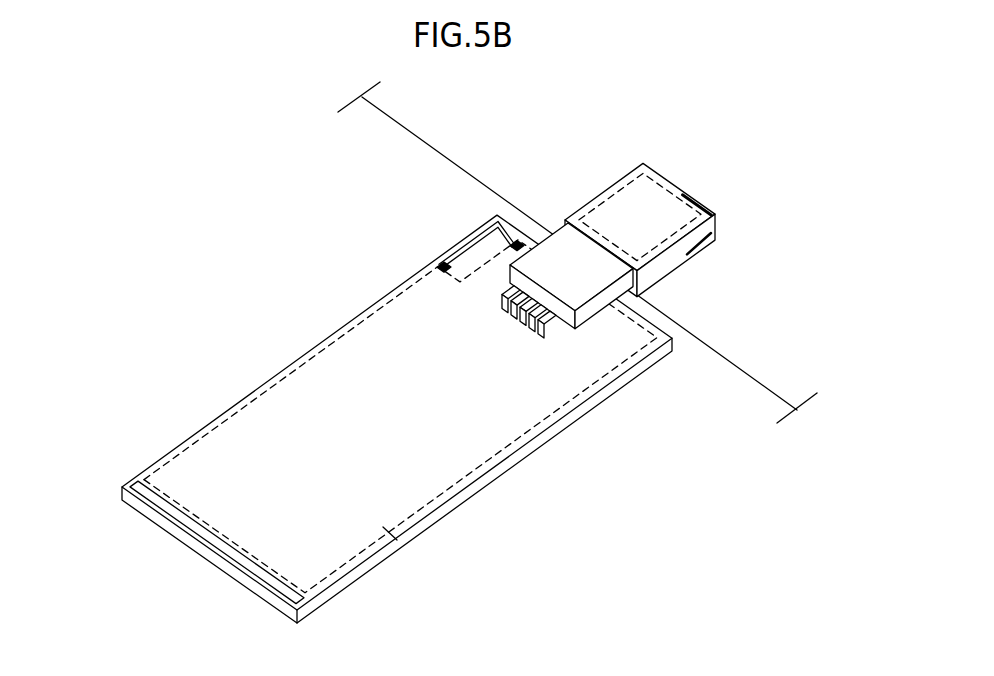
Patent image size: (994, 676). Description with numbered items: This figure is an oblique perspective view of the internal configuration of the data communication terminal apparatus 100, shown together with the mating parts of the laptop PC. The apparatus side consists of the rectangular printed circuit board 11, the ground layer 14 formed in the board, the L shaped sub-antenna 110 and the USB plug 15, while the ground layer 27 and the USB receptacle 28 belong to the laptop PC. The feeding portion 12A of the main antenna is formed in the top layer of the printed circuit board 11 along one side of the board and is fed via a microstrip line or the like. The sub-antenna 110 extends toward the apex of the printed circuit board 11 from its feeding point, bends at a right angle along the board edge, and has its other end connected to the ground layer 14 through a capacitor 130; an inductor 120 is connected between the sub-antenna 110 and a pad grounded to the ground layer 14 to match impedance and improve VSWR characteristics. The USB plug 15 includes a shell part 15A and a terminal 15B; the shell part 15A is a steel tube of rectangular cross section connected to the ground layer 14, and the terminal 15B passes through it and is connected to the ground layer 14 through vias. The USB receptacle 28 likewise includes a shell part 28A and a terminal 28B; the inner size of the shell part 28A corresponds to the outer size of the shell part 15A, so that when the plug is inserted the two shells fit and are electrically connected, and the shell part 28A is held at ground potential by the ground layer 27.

The data communication terminal apparatus 100 is at (386, 393).
The printed circuit board 11 is at (497, 481).
The ground layer 14 is at (403, 548).
The feeding portion 12A is at (143, 478).
The sub-antenna 110 is at (478, 228).
The inductor 120 is at (441, 262).
The capacitor 130 is at (521, 244).
The USB plug 15 is at (590, 364).
The shell part 15A is at (580, 285).
The terminal 15B is at (557, 333).
The USB receptacle 28 is at (699, 229).
The shell part 28A is at (712, 217).
The terminal 28B is at (700, 199).
The ground layer 27 is at (772, 372).